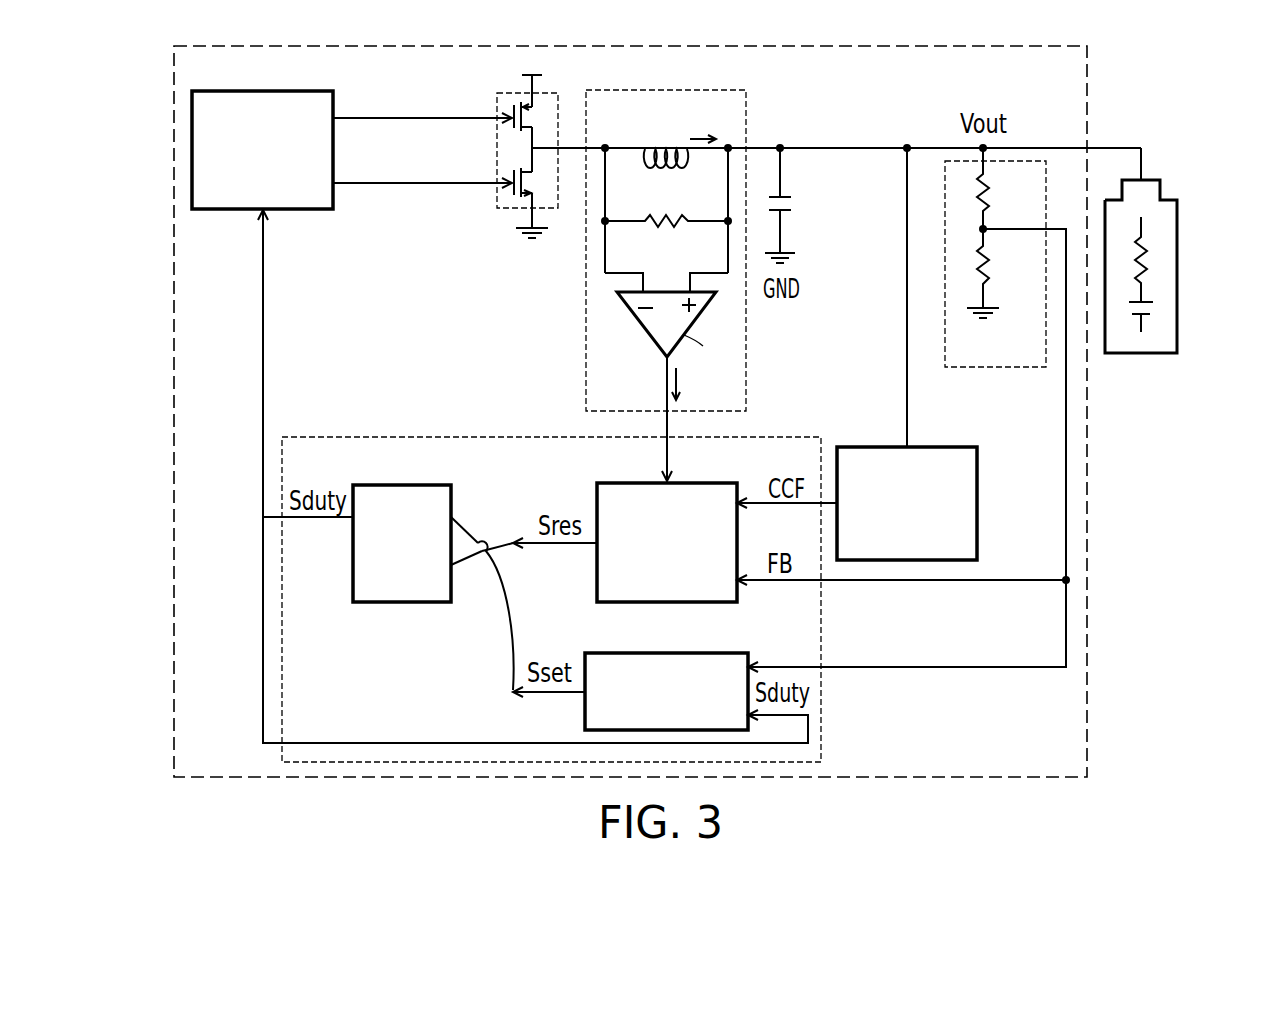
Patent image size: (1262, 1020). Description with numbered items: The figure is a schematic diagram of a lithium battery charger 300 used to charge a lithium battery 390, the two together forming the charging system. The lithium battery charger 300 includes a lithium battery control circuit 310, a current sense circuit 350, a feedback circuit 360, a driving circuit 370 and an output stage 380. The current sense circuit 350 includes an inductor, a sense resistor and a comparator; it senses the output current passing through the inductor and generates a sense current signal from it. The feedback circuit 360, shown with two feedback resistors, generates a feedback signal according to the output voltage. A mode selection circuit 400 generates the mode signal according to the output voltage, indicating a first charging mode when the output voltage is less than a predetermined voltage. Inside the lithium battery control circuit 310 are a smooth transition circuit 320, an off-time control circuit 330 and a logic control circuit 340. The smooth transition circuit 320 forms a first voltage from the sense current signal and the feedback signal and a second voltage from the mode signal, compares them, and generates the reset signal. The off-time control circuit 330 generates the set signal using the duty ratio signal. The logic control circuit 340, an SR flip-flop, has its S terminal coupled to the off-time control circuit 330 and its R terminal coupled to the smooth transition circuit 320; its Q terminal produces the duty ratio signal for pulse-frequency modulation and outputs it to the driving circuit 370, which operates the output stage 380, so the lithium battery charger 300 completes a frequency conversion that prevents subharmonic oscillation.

The lithium battery charger 300 is at (1087, 508).
The lithium battery control circuit 310 is at (494, 437).
The smooth transition circuit 320 is at (694, 483).
The off-time control circuit 330 is at (694, 653).
The logic control circuit 340 is at (404, 484).
The current sense circuit 350 is at (746, 350).
The feedback circuit 360 is at (1031, 368).
The driving circuit 370 is at (292, 90).
The output stage 380 is at (496, 147).
The lithium battery 390 is at (1177, 245).
The mode selection circuit 400 is at (977, 535).